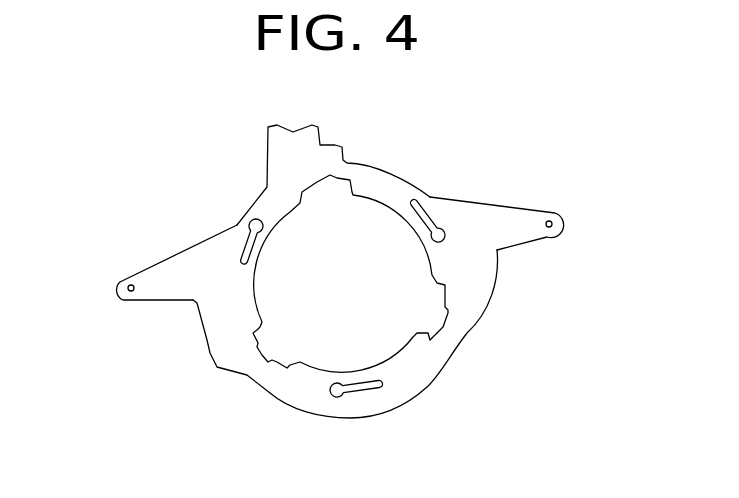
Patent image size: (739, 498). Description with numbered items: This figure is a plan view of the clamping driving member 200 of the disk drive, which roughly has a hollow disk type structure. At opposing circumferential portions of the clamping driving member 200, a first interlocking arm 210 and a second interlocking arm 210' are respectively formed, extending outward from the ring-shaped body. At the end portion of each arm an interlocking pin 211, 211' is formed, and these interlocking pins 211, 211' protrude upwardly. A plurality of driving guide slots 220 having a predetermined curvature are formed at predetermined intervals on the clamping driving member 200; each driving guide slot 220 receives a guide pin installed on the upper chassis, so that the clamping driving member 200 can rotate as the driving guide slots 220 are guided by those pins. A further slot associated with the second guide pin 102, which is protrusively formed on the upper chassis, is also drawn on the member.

The clamping driving member 200 is at (236, 177).
The first interlocking arm 210 is at (497, 195).
The second interlocking arm 210' is at (174, 248).
The interlocking pin 211 is at (582, 192).
The interlocking pin 211' is at (101, 312).
The second guide pin 102 is at (425, 210).
The driving guide slot 220 is at (251, 231).